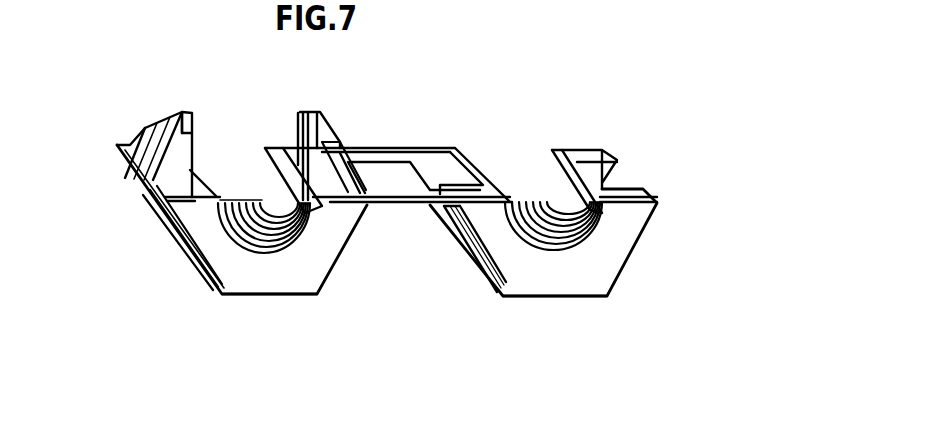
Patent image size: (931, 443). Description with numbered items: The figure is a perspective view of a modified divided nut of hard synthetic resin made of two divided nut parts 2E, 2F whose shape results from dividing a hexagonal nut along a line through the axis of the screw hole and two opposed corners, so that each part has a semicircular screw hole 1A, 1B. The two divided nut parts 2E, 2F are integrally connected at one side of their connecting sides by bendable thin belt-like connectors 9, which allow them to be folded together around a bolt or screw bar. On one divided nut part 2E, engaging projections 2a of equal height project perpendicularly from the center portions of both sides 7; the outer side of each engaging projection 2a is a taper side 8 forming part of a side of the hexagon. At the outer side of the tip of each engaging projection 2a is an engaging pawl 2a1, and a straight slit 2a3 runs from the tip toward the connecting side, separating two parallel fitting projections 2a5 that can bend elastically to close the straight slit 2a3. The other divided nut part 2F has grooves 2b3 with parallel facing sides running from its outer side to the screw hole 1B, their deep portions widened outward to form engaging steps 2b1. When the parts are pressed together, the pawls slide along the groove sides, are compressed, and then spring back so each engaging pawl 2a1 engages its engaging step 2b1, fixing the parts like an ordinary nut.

The screw hole 1A is at (272, 228).
The screw hole of semicircle 1B is at (545, 200).
The engaging projection 2a is at (180, 105).
The engaging pawl 2a1 is at (192, 132).
The straight slit 2a3 is at (148, 130).
The fitting projection 2a5 is at (160, 182).
The engaging step 2b1 is at (450, 240).
The groove 2b3 is at (447, 175).
The divided nut part 2E is at (239, 296).
The divided nut part 2F is at (567, 283).
The side 7 is at (182, 248).
The taper side 8 is at (150, 134).
The belt-like connector 9 is at (400, 149).